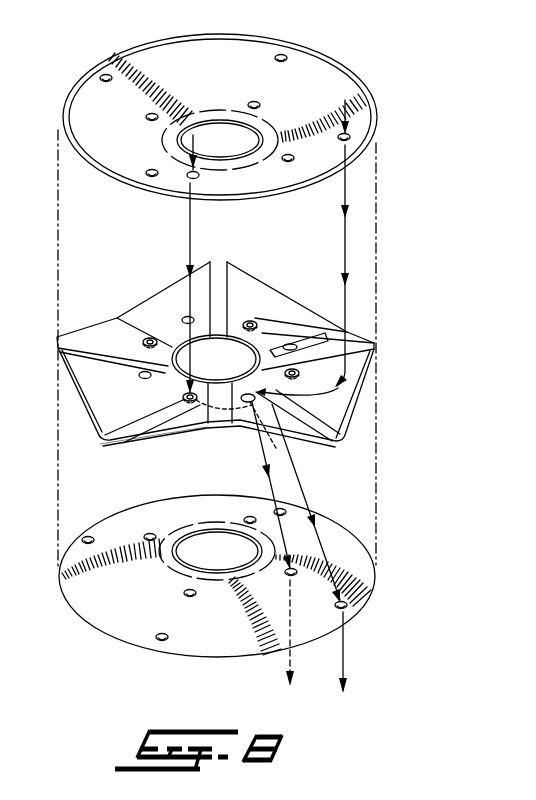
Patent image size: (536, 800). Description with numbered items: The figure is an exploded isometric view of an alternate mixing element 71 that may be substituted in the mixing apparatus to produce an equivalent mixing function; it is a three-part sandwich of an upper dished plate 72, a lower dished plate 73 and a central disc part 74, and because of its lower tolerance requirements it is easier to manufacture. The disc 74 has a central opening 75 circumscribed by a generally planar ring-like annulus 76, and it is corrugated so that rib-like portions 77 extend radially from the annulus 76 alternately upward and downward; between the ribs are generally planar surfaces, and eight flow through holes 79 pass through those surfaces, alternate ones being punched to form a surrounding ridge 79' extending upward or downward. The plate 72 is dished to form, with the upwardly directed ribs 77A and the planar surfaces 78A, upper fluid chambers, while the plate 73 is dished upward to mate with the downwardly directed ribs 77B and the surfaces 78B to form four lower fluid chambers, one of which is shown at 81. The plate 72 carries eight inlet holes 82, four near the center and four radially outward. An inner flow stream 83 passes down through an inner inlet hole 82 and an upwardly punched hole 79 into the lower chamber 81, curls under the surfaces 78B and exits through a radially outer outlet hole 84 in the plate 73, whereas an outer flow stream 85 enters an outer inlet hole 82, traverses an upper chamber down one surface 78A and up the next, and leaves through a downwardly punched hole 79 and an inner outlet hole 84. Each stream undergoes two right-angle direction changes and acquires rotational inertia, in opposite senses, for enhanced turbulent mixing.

The mixing element 71 is at (400, 256).
The upper dished plate 72 is at (362, 100).
The lower dished plate 73 is at (370, 570).
The central disc part 74 is at (367, 367).
The central opening 75 is at (230, 345).
The annulus 76 is at (252, 340).
The rib-like portions 77 is at (228, 268).
The upwardly directed ribs 77A is at (374, 341).
The downwardly directed ribs 77B is at (340, 445).
The planar surfaces 78A is at (348, 394).
The planar surfaces 78B is at (303, 447).
The flow through holes 79 is at (219, 377).
The surrounding ridge 79' is at (310, 370).
The lower fluid chamber 81 is at (188, 466).
The inlet holes 82 is at (287, 54).
The flow stream 83 is at (188, 224).
The outlet holes 84 is at (296, 576).
The flow stream 85 is at (343, 200).